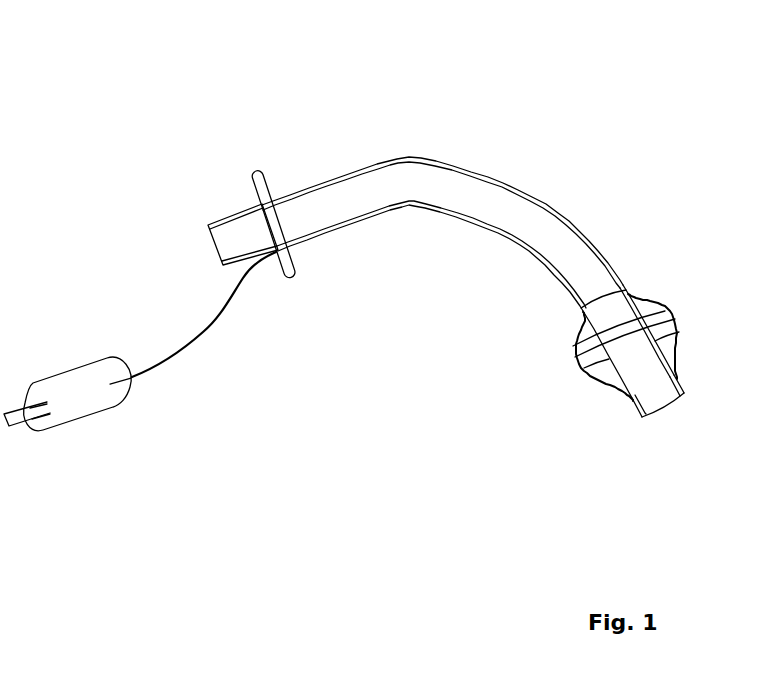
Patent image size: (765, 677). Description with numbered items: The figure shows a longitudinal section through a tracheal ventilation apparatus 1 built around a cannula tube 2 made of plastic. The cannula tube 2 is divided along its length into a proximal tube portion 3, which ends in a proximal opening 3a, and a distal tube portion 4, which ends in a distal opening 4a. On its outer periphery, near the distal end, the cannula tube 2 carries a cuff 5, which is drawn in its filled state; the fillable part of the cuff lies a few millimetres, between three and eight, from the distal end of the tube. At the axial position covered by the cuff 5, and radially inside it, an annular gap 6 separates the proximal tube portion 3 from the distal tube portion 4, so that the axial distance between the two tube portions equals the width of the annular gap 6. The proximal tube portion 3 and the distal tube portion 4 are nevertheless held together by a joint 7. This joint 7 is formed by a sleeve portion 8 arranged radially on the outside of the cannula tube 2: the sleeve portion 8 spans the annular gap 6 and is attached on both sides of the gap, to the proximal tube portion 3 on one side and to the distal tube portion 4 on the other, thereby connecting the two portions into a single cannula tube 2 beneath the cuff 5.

The tracheal ventilation apparatus 1 is at (500, 134).
The cannula tube 2 is at (455, 215).
The proximal tube portion 3 is at (587, 236).
The proximal opening 3a is at (215, 247).
The distal tube portion 4 is at (657, 388).
The distal opening 4a is at (672, 395).
The cuff 5 is at (668, 343).
The annular gap 6 is at (622, 345).
The joint 7 is at (652, 332).
The sleeve portion 8 is at (663, 347).